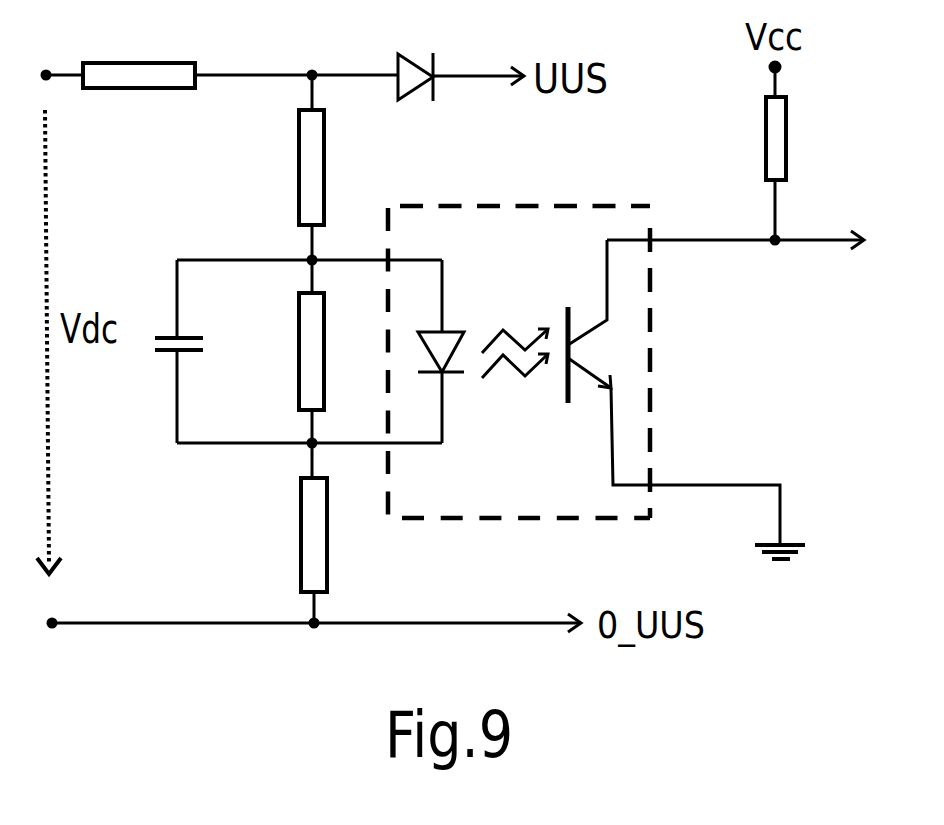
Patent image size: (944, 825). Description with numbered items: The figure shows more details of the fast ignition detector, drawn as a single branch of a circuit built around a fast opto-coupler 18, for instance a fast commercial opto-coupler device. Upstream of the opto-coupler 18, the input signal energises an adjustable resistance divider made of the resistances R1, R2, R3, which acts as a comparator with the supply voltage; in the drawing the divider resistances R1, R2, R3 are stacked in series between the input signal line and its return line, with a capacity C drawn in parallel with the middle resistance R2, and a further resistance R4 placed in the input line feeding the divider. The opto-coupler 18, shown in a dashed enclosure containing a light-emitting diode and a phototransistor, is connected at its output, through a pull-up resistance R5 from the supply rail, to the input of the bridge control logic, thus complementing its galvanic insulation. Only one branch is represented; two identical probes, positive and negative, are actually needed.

The fast opto-coupler 18 is at (558, 382).
The resistance divider resistor R1 is at (281, 167).
The resistance divider resistor R2 is at (284, 351).
The resistance divider resistor R3 is at (287, 535).
The resistor R4 is at (139, 99).
The resistor R5 is at (752, 138).
The capacitor C is at (184, 372).